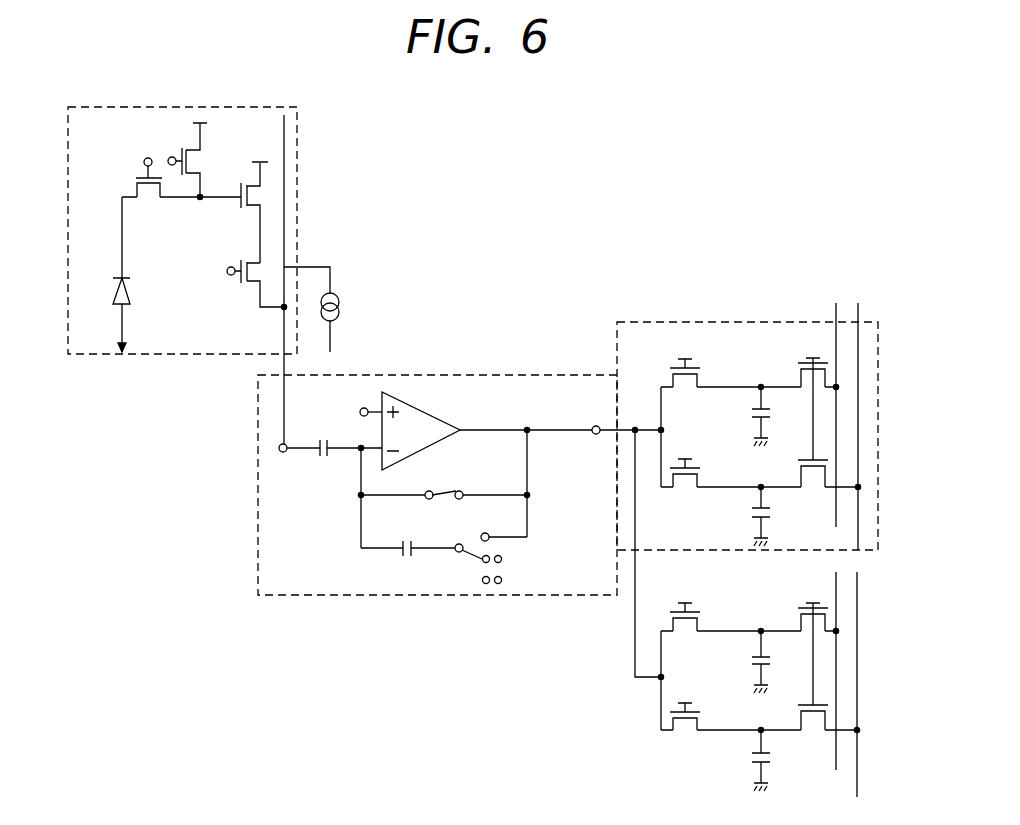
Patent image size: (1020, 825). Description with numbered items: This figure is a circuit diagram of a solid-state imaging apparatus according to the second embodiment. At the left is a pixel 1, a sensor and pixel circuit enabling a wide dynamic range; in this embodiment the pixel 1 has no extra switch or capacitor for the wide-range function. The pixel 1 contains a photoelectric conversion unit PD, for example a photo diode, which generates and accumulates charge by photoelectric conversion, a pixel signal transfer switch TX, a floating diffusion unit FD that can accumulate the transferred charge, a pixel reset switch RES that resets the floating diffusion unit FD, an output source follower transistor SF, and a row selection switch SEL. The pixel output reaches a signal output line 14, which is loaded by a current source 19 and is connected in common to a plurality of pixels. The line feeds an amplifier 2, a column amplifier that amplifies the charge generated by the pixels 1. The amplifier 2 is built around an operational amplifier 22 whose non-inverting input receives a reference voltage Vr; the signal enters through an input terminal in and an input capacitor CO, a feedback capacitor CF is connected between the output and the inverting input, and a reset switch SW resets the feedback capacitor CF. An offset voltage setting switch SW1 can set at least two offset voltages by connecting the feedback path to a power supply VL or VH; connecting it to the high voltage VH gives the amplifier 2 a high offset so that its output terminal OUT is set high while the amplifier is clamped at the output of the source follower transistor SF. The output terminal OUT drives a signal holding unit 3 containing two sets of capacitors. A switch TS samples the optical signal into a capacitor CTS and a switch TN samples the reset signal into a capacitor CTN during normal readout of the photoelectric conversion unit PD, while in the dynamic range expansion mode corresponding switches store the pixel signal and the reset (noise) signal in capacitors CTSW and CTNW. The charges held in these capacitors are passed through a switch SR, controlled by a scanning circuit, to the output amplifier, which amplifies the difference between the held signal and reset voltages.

The pixel 1 is at (297, 118).
The amplifier 2 is at (490, 375).
The signal holding unit 3 is at (725, 322).
The signal output line 14 is at (284, 368).
The current source 19 is at (340, 300).
The operational amplifier 22 is at (418, 402).
The floating diffusion unit FD is at (216, 176).
The pixel reset switch RES is at (175, 159).
The pixel signal transfer switch TX is at (172, 177).
The photoelectric conversion unit PD is at (106, 274).
The output source follower transistor SF is at (256, 196).
The row selection switch SEL is at (257, 272).
The reference voltage terminal Vr is at (359, 412).
The input terminal in is at (292, 461).
The input capacitor CO is at (344, 465).
The reset switch SW is at (443, 489).
The offset voltage setting switch SW1 is at (483, 536).
The feedback capacitor CF is at (408, 566).
The power supply VL is at (506, 560).
The power supply VH is at (508, 581).
The output terminal OUT is at (560, 417).
The switch TS is at (711, 360).
The switch TN is at (711, 457).
The switch SR is at (818, 752).
The capacitor CTS is at (737, 415).
The capacitor CTN is at (737, 515).
The capacitor CTSW is at (748, 655).
The capacitor CTNW is at (725, 759).